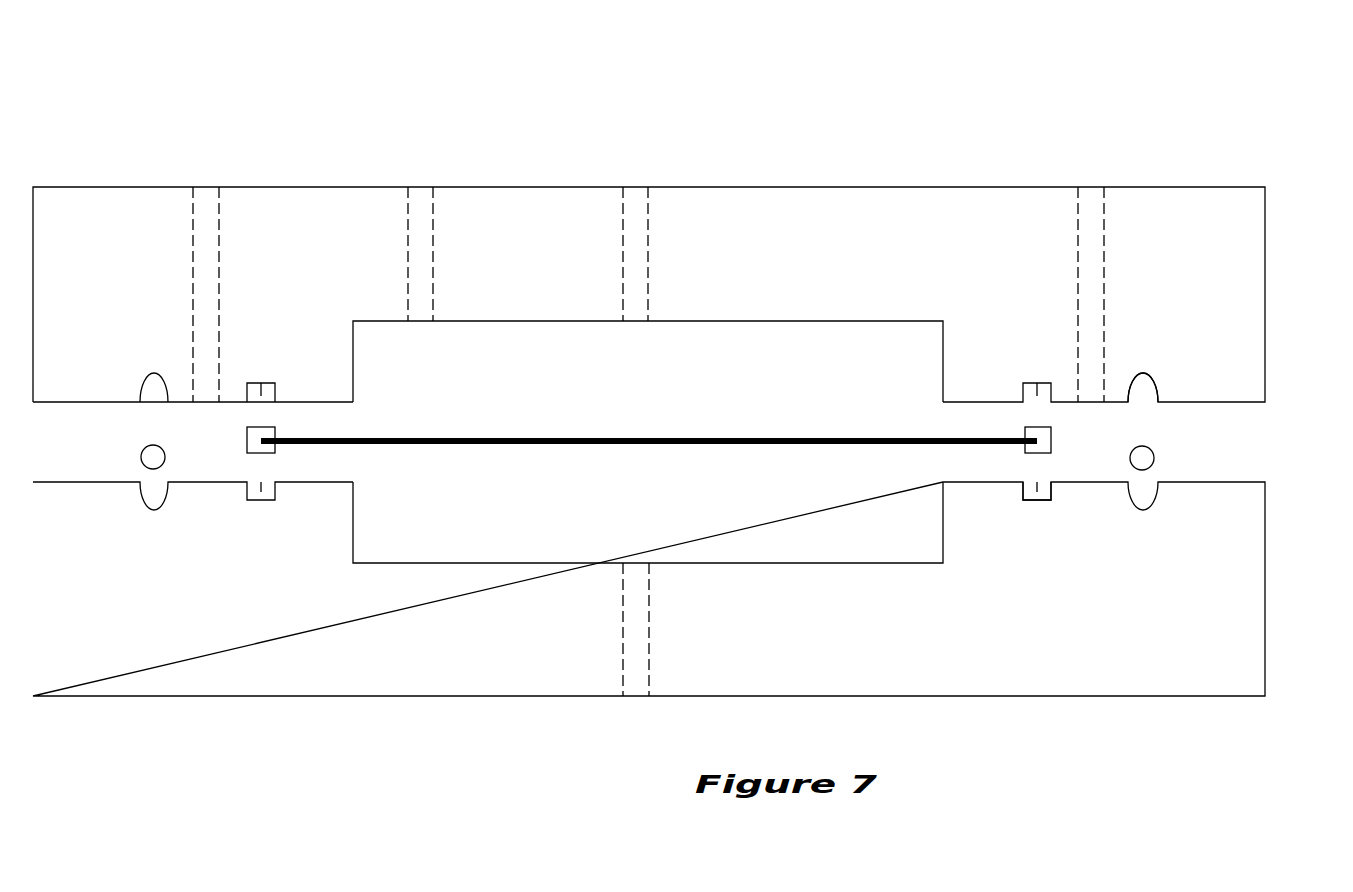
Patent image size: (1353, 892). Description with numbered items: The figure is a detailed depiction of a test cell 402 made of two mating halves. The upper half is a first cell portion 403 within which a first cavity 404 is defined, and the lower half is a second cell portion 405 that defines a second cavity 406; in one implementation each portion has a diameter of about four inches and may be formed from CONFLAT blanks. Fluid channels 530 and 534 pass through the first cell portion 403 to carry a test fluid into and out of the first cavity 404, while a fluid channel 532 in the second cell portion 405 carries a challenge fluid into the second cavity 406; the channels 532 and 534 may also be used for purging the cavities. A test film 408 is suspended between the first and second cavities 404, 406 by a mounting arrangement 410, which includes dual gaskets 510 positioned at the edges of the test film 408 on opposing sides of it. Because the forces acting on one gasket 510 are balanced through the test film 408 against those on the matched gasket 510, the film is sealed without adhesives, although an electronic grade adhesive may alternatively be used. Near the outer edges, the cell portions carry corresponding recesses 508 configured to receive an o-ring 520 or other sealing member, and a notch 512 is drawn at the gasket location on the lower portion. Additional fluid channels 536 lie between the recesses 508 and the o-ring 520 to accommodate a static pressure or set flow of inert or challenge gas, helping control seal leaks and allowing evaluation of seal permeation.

The test cell 402 is at (1113, 128).
The first cell portion 403 is at (1265, 233).
The first cavity 404 is at (503, 363).
The second cell portion 405 is at (1265, 578).
The second cavity 406 is at (846, 532).
The test film 408 is at (690, 437).
The mounting arrangement 410 is at (247, 435).
The recess 508 is at (1150, 372).
The gasket 510 is at (1051, 434).
The connector notch 512 is at (1028, 500).
The o-ring 520 is at (1153, 452).
The fluid channel 530 is at (648, 256).
The fluid channel 532 is at (649, 622).
The fluid channel 534 is at (408, 258).
The additional fluid channel 536 is at (193, 256).